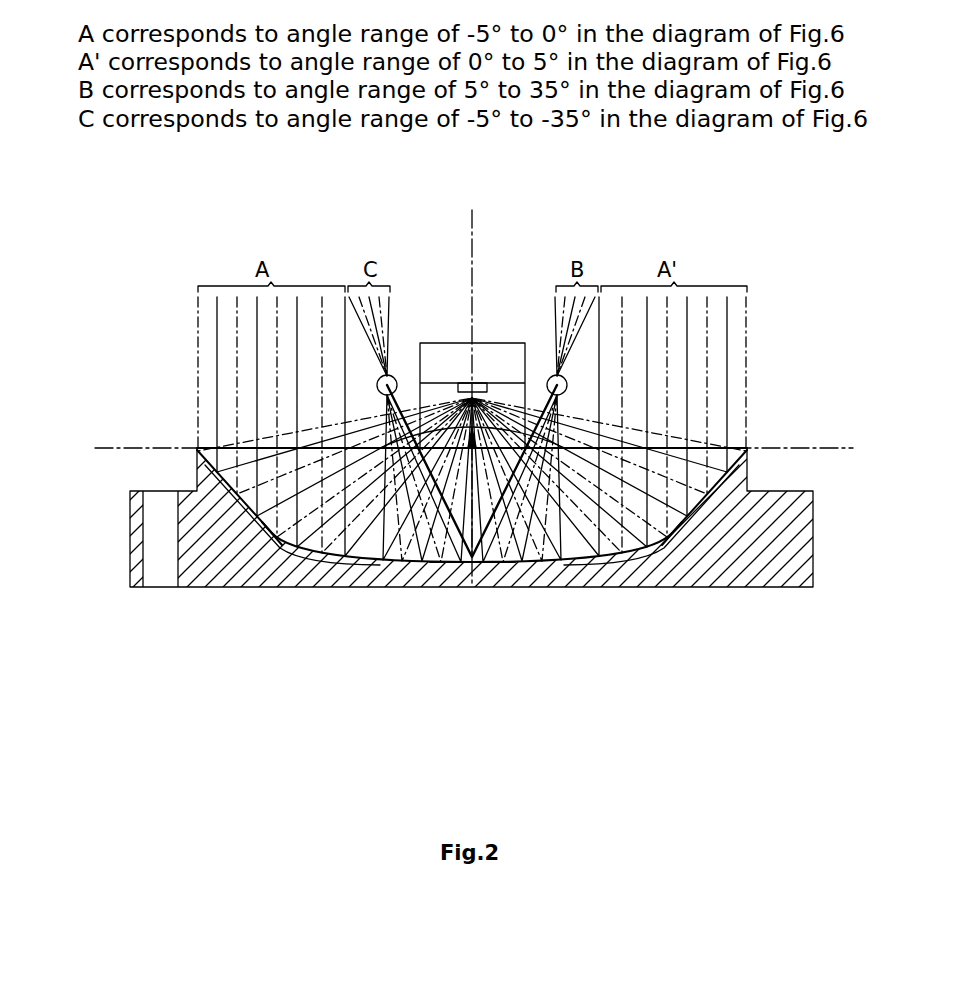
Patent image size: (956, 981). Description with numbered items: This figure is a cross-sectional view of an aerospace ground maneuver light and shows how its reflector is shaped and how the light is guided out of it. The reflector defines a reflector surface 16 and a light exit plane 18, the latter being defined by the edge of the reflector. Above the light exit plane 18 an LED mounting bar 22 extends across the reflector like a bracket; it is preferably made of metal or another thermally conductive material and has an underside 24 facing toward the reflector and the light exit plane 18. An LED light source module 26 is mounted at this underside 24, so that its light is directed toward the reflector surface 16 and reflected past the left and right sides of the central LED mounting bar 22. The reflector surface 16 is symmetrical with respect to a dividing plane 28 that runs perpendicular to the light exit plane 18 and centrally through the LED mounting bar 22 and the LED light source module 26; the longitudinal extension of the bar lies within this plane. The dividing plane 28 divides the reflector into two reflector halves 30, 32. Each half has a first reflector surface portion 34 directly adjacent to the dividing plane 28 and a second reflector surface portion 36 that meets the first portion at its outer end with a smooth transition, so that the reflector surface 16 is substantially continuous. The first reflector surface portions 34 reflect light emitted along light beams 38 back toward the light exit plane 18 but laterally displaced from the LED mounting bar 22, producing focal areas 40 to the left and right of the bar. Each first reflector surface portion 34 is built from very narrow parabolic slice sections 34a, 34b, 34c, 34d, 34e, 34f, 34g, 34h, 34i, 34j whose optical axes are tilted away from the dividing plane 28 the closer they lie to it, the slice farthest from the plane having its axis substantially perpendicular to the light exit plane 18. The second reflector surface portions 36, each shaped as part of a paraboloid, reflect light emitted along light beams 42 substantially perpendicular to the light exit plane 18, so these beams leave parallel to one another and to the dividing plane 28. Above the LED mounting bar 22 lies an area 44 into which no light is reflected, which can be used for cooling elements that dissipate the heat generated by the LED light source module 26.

The reflector surface 16 is at (703, 453).
The light exit plane 18 is at (133, 448).
The LED mounting bar 22 is at (487, 355).
The underside 24 is at (372, 382).
The LED light source module 26 is at (478, 392).
The dividing plane 28 is at (470, 222).
The reflector half 30 is at (257, 405).
The reflector half 32 is at (674, 414).
The first reflector surface portion 34 is at (445, 580).
The parabolic slice section 34a is at (473, 587).
The parabolic slice section 34b is at (480, 590).
The parabolic slice section 34c is at (487, 590).
The parabolic slice section 34d is at (493, 590).
The parabolic slice section 34e is at (497, 590).
The parabolic slice section 34f is at (500, 590).
The parabolic slice section 34g is at (502, 590).
The parabolic slice section 34h is at (548, 590).
The parabolic slice section 34i is at (560, 590).
The parabolic slice section 34j is at (577, 590).
The second reflector surface portion 36 is at (275, 538).
The light beams 38 is at (453, 392).
The focal areas 40 is at (380, 388).
The light beams 42 is at (285, 482).
The area 44 is at (403, 317).